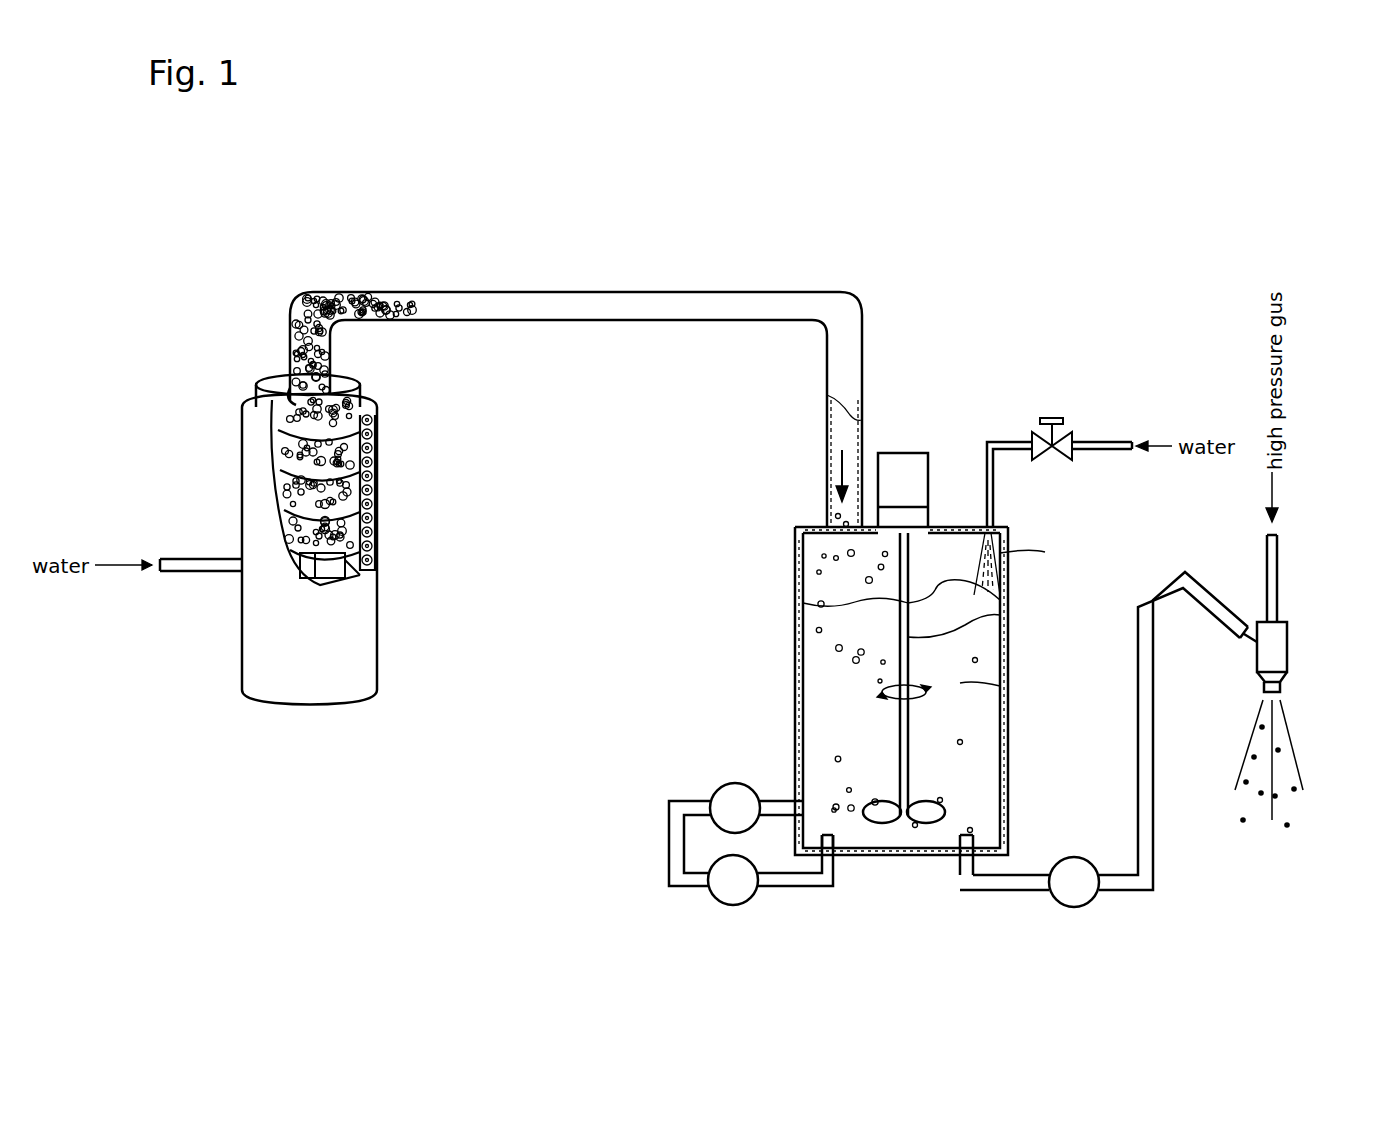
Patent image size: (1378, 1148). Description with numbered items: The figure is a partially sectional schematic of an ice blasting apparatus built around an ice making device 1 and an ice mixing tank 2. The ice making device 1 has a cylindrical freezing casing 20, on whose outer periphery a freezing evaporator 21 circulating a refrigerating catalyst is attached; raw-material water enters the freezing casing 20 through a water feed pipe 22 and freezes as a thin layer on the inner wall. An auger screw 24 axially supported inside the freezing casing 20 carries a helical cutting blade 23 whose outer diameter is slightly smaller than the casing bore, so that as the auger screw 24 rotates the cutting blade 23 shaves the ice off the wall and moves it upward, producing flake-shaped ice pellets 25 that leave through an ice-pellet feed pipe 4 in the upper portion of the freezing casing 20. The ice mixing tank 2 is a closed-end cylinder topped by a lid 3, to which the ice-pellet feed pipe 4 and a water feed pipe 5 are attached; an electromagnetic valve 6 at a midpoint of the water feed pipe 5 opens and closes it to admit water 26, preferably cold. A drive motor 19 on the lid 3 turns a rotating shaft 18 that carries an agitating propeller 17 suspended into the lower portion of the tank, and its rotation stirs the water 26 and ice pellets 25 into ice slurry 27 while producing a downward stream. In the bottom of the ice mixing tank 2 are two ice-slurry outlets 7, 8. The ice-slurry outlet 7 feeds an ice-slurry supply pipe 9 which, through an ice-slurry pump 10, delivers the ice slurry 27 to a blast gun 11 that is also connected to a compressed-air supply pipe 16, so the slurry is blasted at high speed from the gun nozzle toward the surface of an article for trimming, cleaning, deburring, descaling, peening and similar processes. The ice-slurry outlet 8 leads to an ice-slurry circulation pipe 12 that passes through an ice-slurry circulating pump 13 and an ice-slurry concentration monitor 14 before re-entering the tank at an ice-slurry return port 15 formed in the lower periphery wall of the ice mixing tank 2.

The ice making device 1 is at (392, 566).
The ice mixing tank 2 is at (1012, 655).
The lid 3 is at (955, 528).
The ice-pellet feed pipe 4 is at (410, 293).
The water feed pipe 5 is at (993, 490).
The electromagnetic valve 6 is at (1051, 418).
The ice-slurry outlet 7 is at (962, 836).
The ice-slurry outlet 8 is at (838, 838).
The ice-slurry supply pipe 9 is at (1003, 892).
The ice-slurry pump 10 is at (1086, 858).
The blast gun 11 is at (1288, 648).
The ice-slurry circulation pipe 12 is at (793, 887).
The ice-slurry circulating pump 13 is at (736, 904).
The ice-slurry concentration monitor 14 is at (718, 792).
The ice-slurry return port 15 is at (803, 806).
The compressed-air supply pipe 16 is at (1278, 585).
The agitating propeller 17 is at (945, 812).
The rotating shaft 18 is at (930, 630).
The drive motor 19 is at (902, 453).
The freezing casing 20 is at (368, 400).
The freezing evaporator 21 is at (377, 492).
The water feed pipe 22 is at (192, 572).
The cutting blade 23 is at (350, 533).
The auger screw 24 is at (315, 562).
The ice pellets 25 is at (374, 447).
The water 26 is at (1000, 548).
The ice slurry 27 is at (935, 598).